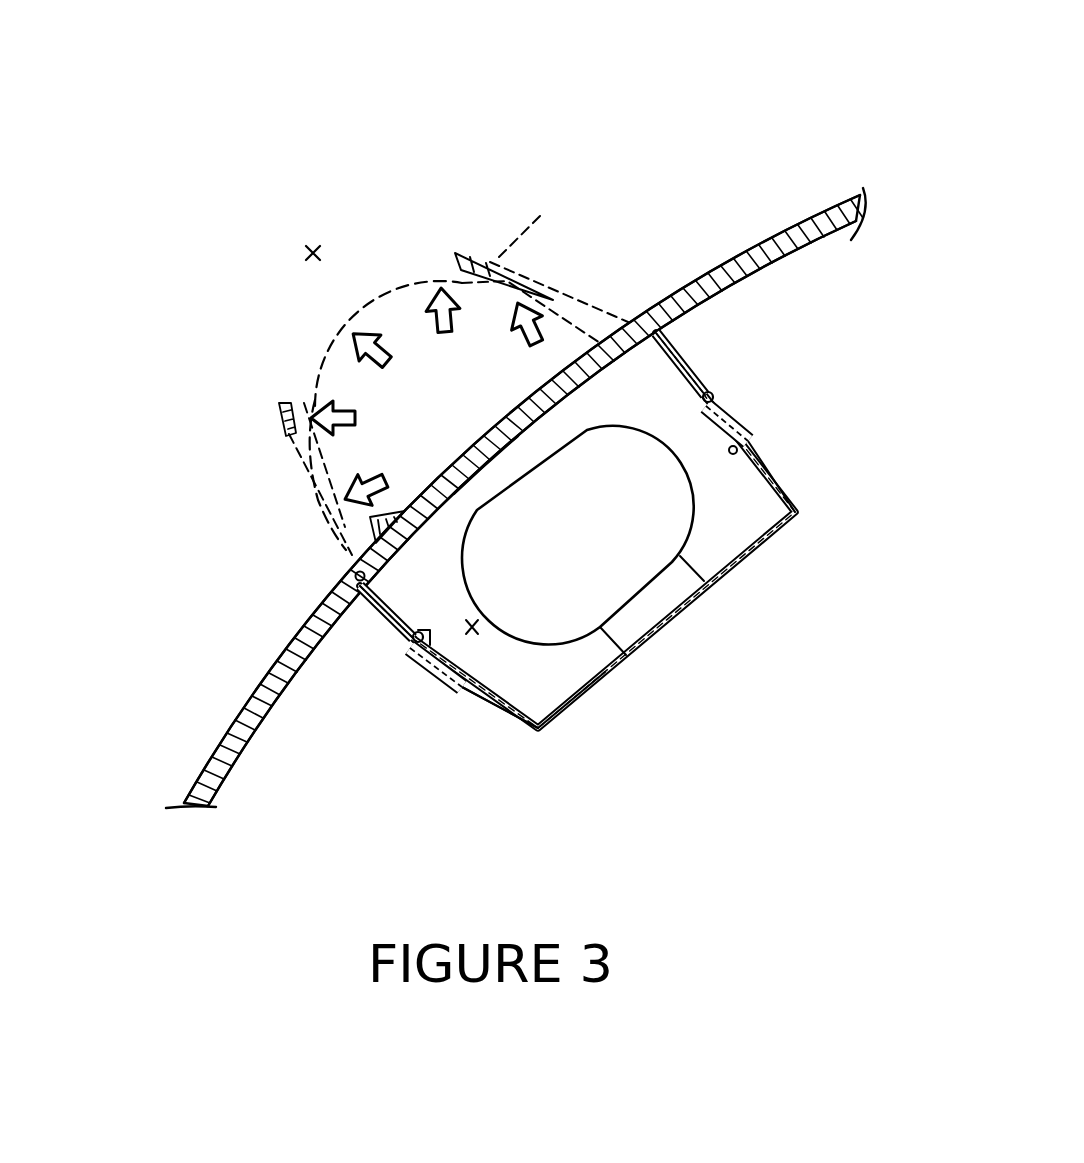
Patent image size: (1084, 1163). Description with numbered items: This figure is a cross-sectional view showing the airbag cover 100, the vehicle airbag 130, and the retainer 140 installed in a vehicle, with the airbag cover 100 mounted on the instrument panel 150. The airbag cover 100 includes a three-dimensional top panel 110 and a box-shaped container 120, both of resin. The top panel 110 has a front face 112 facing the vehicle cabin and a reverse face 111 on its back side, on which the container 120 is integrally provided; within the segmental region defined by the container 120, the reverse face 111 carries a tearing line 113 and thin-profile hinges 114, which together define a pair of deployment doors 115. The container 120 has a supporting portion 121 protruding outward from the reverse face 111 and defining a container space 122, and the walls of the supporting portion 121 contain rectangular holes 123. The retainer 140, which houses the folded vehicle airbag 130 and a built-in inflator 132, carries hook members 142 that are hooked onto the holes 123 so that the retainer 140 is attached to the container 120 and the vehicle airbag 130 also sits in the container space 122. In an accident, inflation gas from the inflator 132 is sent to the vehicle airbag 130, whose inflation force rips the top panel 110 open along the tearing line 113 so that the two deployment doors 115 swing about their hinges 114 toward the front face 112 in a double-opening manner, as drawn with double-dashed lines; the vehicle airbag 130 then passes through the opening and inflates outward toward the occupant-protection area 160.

The airbag cover 100 is at (623, 122).
The top panel 110 is at (660, 302).
The reverse face 111 is at (752, 276).
The front face 112 is at (738, 262).
The tearing line 113 is at (490, 460).
The hinge 114 is at (690, 360).
The deployment door 115 is at (557, 377).
The container 120 is at (673, 346).
The supporting portion 121 is at (750, 430).
The container space 122 is at (477, 680).
The hole 123 is at (702, 396).
The vehicle airbag 130 is at (305, 386).
The inflator 132 is at (637, 617).
The retainer 140 is at (760, 550).
The hook member 142 is at (757, 451).
The instrument panel 150 is at (828, 211).
The occupant-protection area 160 is at (313, 247).